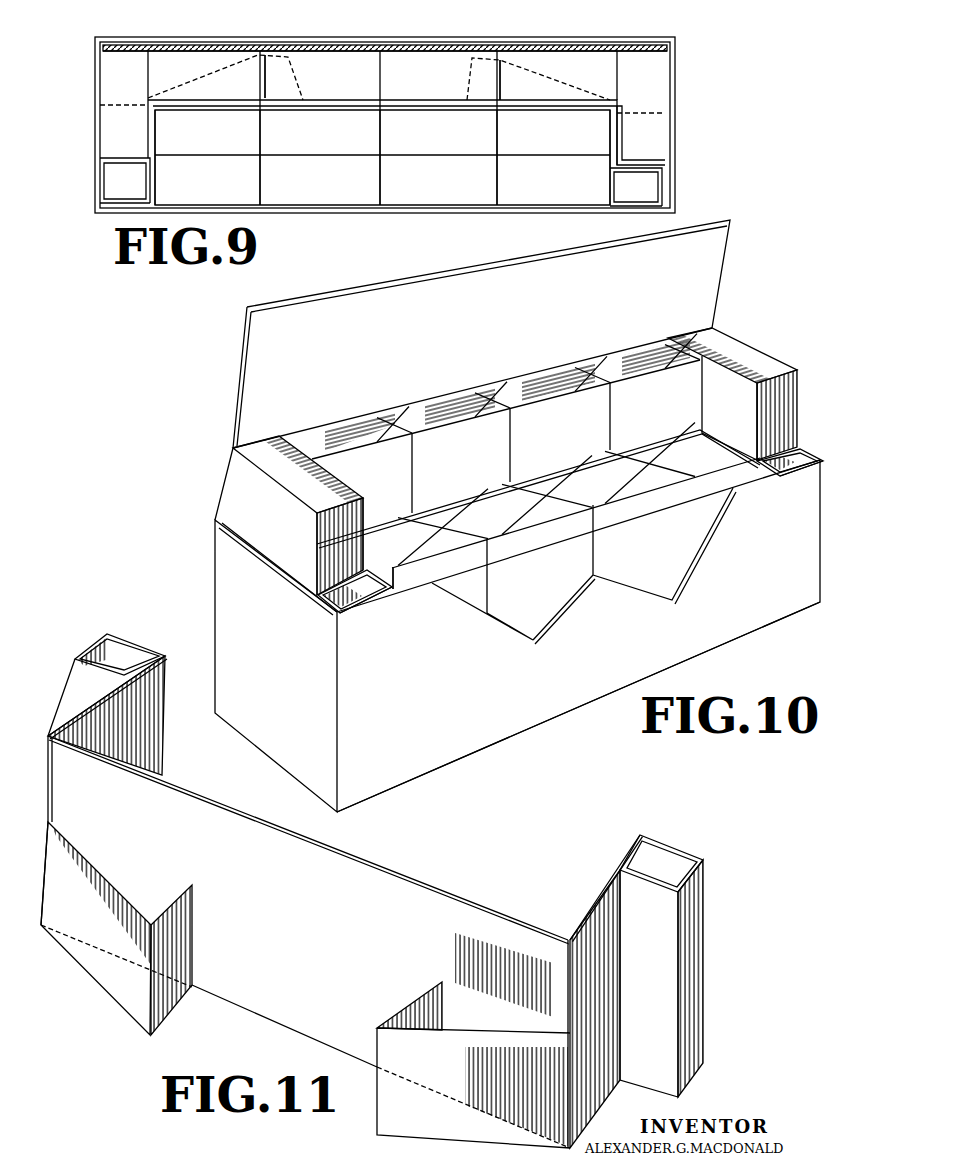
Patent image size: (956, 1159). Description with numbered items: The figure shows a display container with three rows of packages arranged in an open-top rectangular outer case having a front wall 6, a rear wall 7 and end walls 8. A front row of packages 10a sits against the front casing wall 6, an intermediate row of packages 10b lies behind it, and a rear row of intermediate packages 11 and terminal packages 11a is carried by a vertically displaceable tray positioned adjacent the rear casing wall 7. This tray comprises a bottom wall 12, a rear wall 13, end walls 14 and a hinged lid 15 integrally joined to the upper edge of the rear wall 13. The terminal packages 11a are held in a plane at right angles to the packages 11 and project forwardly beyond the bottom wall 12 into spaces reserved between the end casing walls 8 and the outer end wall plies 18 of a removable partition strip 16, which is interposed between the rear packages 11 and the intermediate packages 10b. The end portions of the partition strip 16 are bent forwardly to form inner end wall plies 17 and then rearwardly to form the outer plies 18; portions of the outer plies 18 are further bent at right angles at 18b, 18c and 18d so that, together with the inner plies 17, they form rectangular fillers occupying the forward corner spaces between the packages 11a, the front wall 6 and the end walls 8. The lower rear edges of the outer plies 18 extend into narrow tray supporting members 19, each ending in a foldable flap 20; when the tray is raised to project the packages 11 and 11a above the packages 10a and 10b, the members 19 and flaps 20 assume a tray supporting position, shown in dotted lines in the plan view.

In FIG. 9, the front wall 6 is at (307, 208).
In FIG. 10, the front wall 6 is at (448, 747).
In FIG. 9, the rear wall 7 is at (322, 45).
In FIG. 9, the end walls 8 is at (97, 120).
In FIG. 10, the end walls 8 is at (227, 593).
In FIG. 9, the front row of packages 10a is at (390, 197).
In FIG. 10, the front row of packages 10a is at (612, 570).
In FIG. 9, the intermediate row of packages 10b is at (277, 143).
In FIG. 10, the intermediate row of packages 10b is at (522, 490).
In FIG. 9, the intermediate packages of rear row 11 is at (283, 53).
In FIG. 10, the intermediate packages of rear row 11 is at (370, 420).
In FIG. 9, the terminal packages of rear row 11a is at (112, 83).
In FIG. 10, the terminal packages of rear row 11a is at (232, 488).
In FIG. 9, the bottom wall 12 is at (127, 100).
In FIG. 9, the rear wall 13 is at (375, 45).
In FIG. 10, the rear wall 13 is at (223, 505).
In FIG. 9, the end walls 14 is at (100, 60).
In FIG. 10, the end walls 14 is at (220, 528).
In FIG. 10, the hinged lid 15 is at (481, 334).
In FIG. 9, the partition strip 16 is at (318, 108).
In FIG. 10, the partition strip 16 is at (450, 502).
In FIG. 11, the partition strip 16 is at (355, 852).
In FIG. 9, the inner end wall plies 17 is at (156, 177).
In FIG. 10, the inner end wall plies 17 is at (400, 585).
In FIG. 11, the inner end wall plies 17 is at (124, 691).
In FIG. 9, the outer end wall plies 18 is at (150, 128).
In FIG. 10, the outer end wall plies 18 is at (733, 440).
In FIG. 11, the outer end wall plies 18 is at (88, 703).
In FIG. 9, the right-angle bend of outer end wall ply 18b is at (120, 160).
In FIG. 10, the right-angle bend of outer end wall ply 18b is at (322, 578).
In FIG. 11, the right-angle bend of outer end wall ply 18b is at (83, 675).
In FIG. 9, the right-angle bend of outer end wall ply 18c is at (103, 175).
In FIG. 10, the right-angle bend of outer end wall ply 18c is at (322, 603).
In FIG. 11, the right-angle bend of outer end wall ply 18c is at (87, 652).
In FIG. 9, the right-angle bend of outer end wall ply 18d is at (113, 193).
In FIG. 10, the right-angle bend of outer end wall ply 18d is at (358, 600).
In FIG. 11, the right-angle bend of outer end wall ply 18d is at (138, 645).
In FIG. 9, the tray supporting members 19 is at (222, 98).
In FIG. 11, the tray supporting members 19 is at (110, 866).
In FIG. 9, the foldable flap 20 is at (287, 100).
In FIG. 11, the foldable flap 20 is at (162, 888).